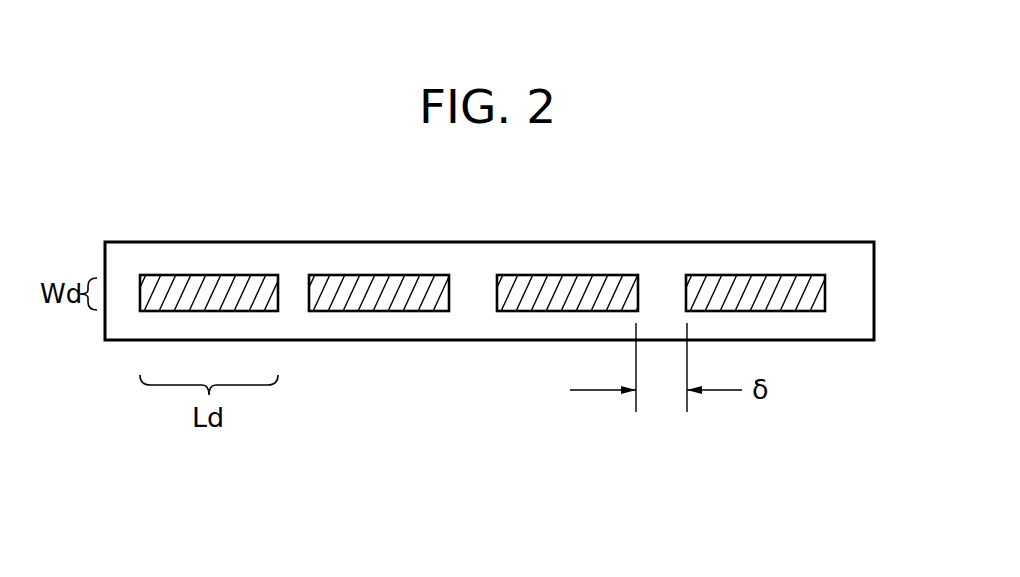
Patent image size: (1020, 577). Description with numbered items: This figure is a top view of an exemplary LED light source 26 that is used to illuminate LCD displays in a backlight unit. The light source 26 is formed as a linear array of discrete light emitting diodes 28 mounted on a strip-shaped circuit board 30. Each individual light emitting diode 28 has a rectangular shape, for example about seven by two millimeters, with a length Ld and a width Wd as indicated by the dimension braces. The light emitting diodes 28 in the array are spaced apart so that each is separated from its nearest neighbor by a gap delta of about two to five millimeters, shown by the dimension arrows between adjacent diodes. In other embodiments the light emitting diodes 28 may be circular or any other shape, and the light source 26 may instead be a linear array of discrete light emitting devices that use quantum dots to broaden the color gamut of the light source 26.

The light source 26 is at (490, 249).
The light emitting diodes 28 is at (285, 270).
The strip-shaped circuit board 30 is at (473, 242).